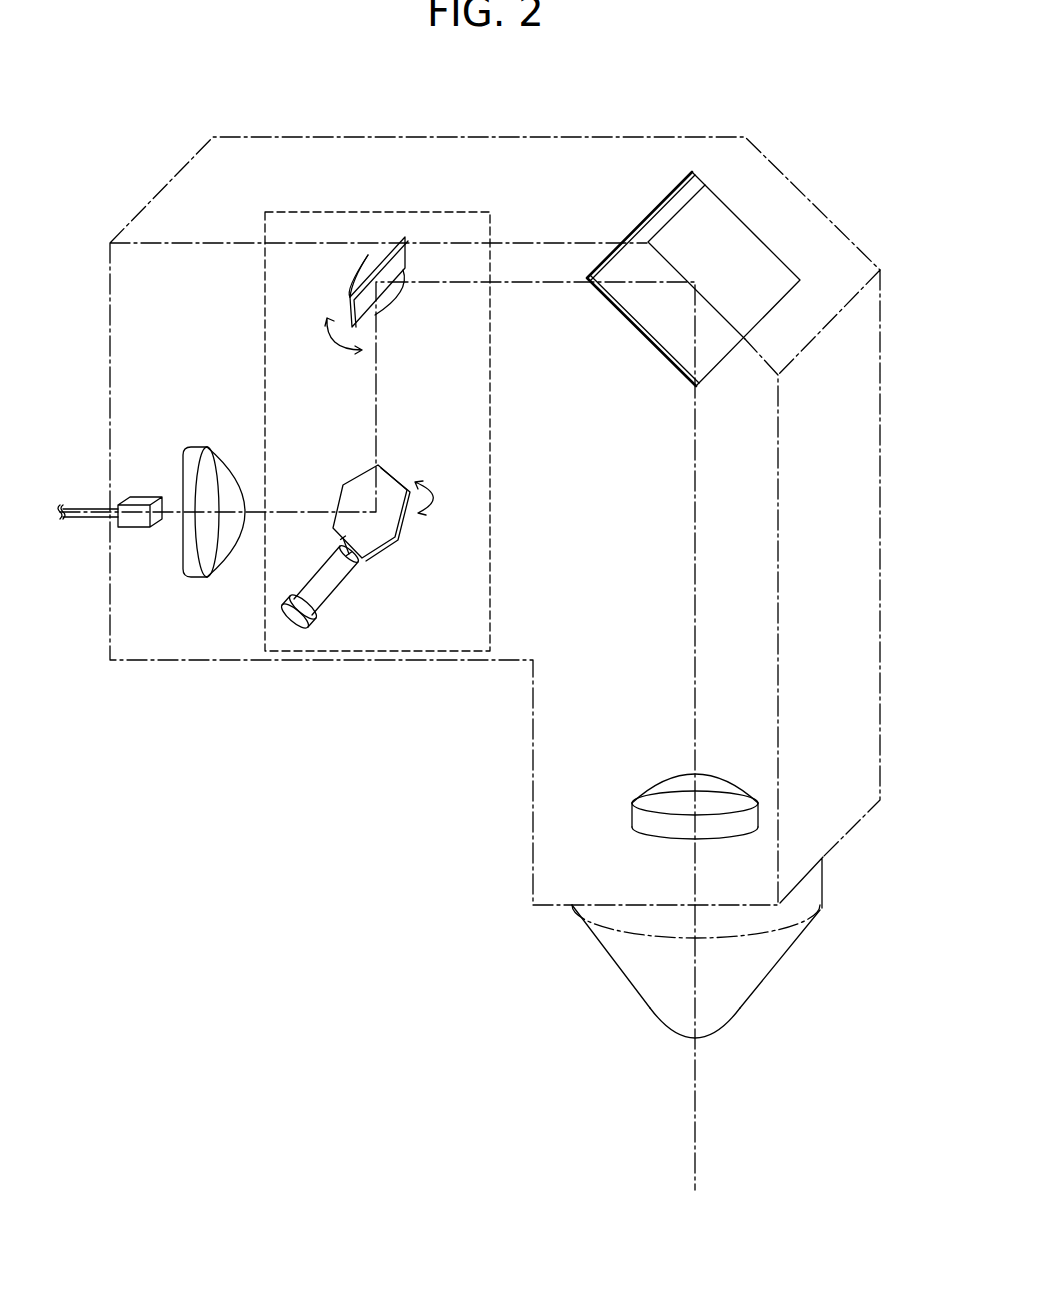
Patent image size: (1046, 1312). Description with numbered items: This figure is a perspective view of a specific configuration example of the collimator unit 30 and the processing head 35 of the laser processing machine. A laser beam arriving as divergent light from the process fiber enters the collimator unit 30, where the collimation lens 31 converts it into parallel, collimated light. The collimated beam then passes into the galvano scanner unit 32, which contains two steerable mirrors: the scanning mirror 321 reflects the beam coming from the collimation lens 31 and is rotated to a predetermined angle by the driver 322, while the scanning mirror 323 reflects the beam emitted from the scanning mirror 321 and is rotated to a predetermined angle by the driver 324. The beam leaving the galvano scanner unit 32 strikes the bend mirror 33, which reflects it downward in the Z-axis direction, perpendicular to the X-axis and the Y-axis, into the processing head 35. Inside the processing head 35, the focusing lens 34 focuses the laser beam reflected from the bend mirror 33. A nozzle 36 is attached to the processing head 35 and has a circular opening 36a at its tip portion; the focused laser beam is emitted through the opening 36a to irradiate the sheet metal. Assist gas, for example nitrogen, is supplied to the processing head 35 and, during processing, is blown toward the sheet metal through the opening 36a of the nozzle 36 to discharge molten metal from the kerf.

The collimator unit 30 is at (568, 157).
The collimation lens 31 is at (205, 446).
The galvano scanner unit 32 is at (360, 661).
The scanning mirror 321 is at (358, 478).
The driver 322 is at (328, 600).
The scanning mirror 323 is at (400, 258).
The driver 324 is at (352, 270).
The bend mirror 33 is at (682, 188).
The focusing lens 34 is at (740, 785).
The processing head 35 is at (852, 729).
The nozzle 36 is at (722, 1008).
The opening 36a is at (700, 1040).